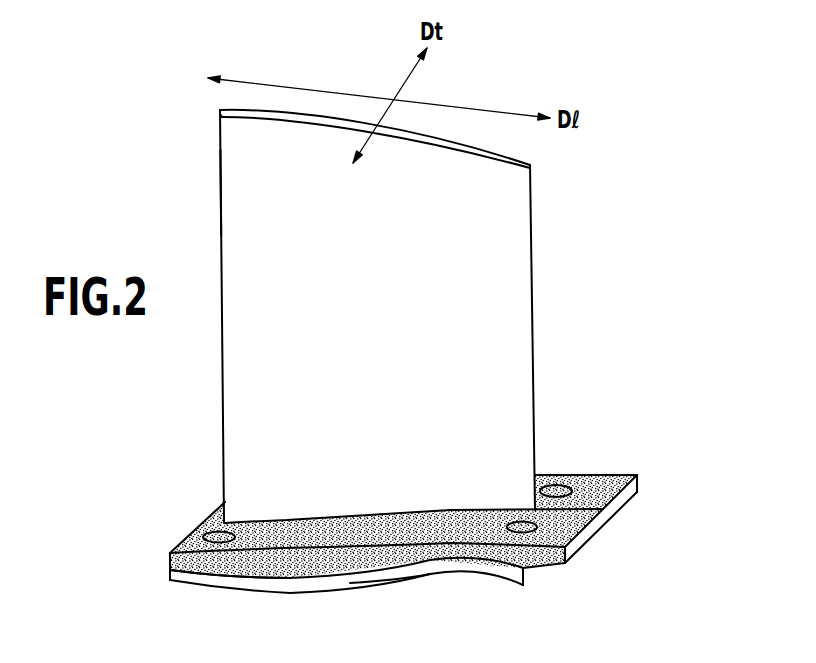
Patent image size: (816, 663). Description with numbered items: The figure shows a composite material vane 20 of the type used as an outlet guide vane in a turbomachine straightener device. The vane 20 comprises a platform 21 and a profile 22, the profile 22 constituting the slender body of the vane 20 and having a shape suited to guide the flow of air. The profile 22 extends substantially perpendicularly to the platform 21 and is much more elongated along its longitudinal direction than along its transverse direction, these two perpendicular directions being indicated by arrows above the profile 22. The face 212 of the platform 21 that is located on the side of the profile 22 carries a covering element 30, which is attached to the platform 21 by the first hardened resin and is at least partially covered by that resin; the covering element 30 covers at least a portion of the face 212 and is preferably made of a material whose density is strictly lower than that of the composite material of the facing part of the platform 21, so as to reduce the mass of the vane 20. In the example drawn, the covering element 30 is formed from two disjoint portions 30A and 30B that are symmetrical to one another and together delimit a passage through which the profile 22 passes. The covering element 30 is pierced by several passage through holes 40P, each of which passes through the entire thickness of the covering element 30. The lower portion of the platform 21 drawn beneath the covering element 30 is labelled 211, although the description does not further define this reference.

The vane 20 is at (541, 259).
The profile 22 is at (248, 188).
The platform 21 is at (287, 593).
The platform lower portion 211 is at (420, 575).
The face of the platform 212 is at (210, 577).
The covering element 30 is at (628, 512).
The disjoint portion of the covering element 30A is at (582, 535).
The disjoint portion of the covering element 30B is at (613, 477).
The passage through holes 40P is at (218, 521).